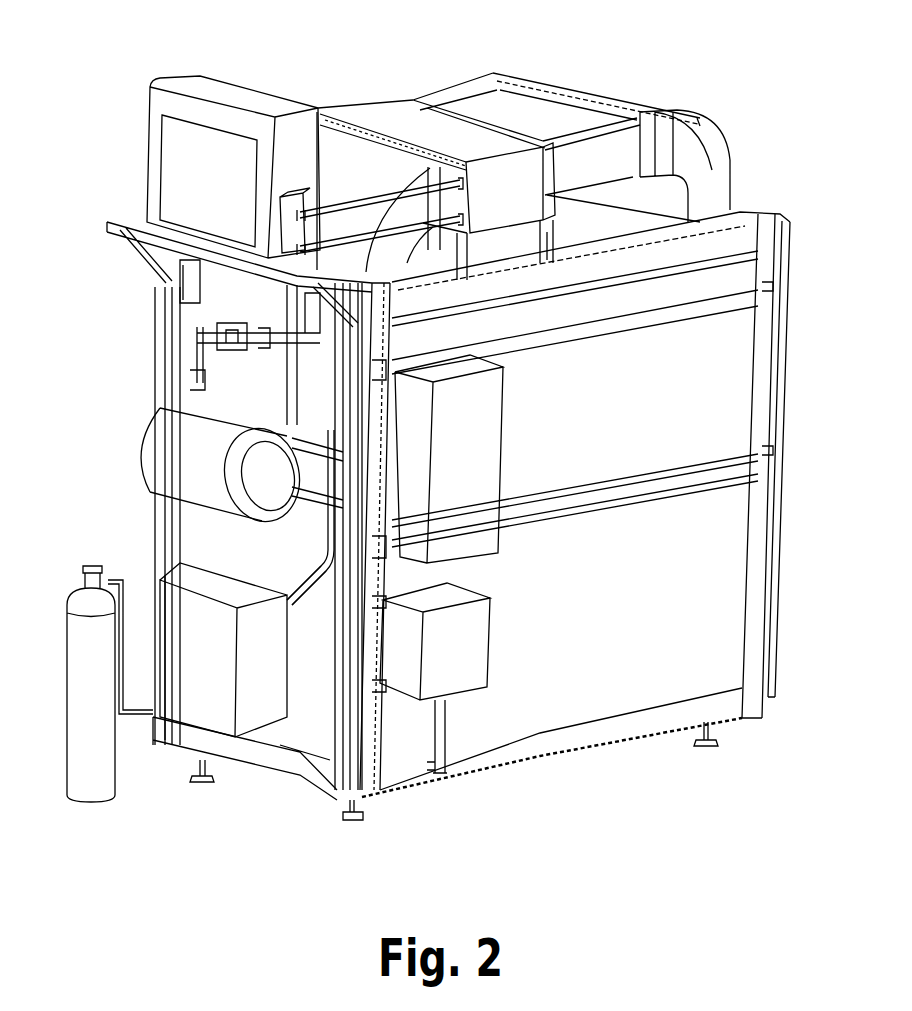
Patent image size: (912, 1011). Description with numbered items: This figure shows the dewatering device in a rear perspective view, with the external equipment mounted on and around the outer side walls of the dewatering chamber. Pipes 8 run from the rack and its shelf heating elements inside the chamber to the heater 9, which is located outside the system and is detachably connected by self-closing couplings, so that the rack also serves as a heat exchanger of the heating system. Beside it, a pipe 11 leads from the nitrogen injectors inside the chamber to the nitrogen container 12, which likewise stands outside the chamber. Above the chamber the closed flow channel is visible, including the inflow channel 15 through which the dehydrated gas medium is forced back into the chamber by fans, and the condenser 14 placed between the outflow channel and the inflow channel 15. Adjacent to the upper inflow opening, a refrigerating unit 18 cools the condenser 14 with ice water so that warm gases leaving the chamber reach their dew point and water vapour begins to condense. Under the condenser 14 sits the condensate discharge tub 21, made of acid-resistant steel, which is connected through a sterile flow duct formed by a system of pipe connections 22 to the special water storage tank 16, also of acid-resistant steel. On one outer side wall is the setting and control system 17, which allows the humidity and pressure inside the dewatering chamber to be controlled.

The pipes 8 is at (193, 349).
The heater 9 is at (197, 460).
The pipe 11 is at (297, 746).
The nitrogen container 12 is at (88, 640).
The condenser 14 is at (383, 118).
The inflow channel 15 is at (353, 166).
The water storage tank 16 is at (190, 610).
The setting and control system 17 is at (457, 414).
The refrigerating unit 18 is at (212, 105).
The condensate discharge tub 21 is at (476, 230).
The pipe connections 22 is at (335, 582).